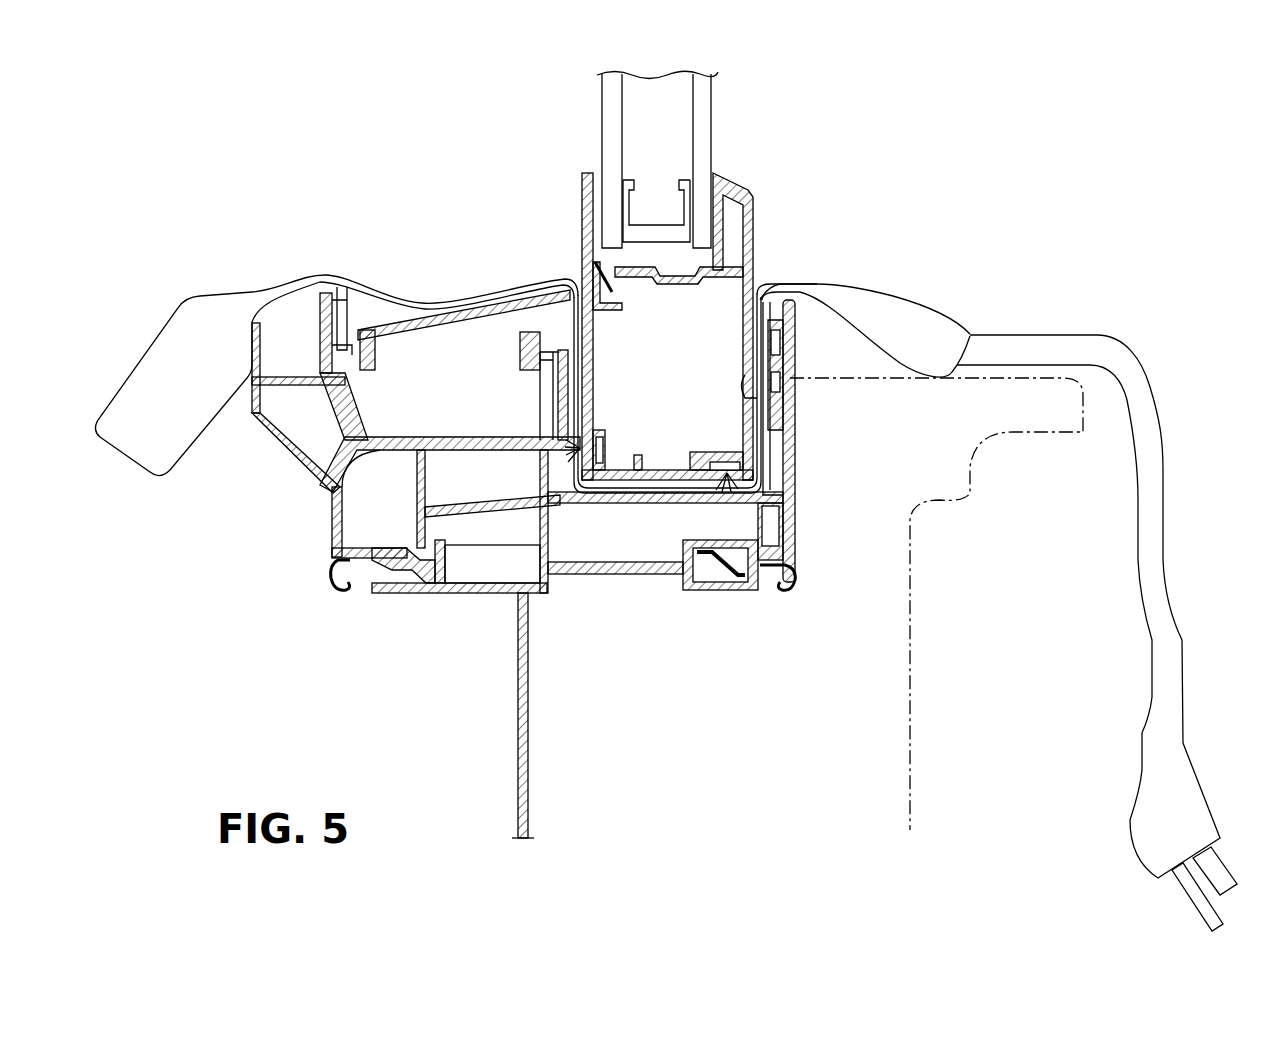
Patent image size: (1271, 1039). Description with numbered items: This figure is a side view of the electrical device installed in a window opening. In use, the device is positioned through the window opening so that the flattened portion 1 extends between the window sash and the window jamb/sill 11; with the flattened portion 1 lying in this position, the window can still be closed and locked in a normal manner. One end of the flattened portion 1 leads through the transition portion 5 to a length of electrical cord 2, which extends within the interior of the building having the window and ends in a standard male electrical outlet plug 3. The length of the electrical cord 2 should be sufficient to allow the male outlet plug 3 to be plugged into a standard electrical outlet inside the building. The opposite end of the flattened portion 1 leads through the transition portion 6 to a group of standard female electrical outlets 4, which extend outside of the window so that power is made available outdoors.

The flattened portion 1 is at (553, 266).
The electrical cord 2 is at (1140, 395).
The male electrical outlet plug 3 is at (1168, 833).
The female electrical outlets 4 is at (110, 470).
The transition portion 5 is at (922, 318).
The transition portion 6 is at (162, 378).
The window jamb/sill 11 is at (643, 503).